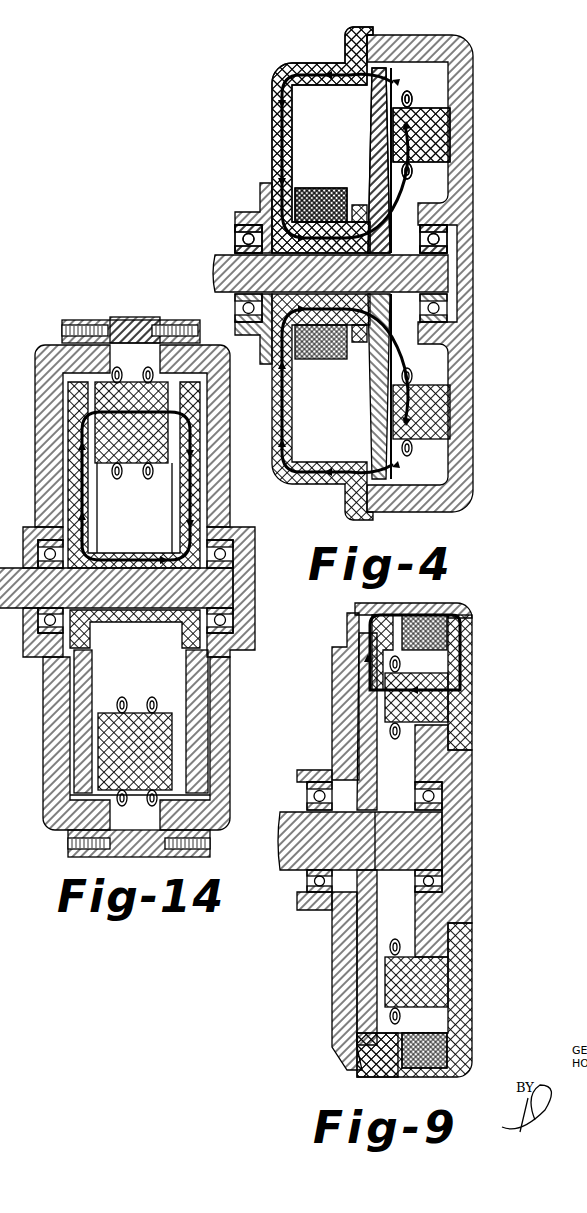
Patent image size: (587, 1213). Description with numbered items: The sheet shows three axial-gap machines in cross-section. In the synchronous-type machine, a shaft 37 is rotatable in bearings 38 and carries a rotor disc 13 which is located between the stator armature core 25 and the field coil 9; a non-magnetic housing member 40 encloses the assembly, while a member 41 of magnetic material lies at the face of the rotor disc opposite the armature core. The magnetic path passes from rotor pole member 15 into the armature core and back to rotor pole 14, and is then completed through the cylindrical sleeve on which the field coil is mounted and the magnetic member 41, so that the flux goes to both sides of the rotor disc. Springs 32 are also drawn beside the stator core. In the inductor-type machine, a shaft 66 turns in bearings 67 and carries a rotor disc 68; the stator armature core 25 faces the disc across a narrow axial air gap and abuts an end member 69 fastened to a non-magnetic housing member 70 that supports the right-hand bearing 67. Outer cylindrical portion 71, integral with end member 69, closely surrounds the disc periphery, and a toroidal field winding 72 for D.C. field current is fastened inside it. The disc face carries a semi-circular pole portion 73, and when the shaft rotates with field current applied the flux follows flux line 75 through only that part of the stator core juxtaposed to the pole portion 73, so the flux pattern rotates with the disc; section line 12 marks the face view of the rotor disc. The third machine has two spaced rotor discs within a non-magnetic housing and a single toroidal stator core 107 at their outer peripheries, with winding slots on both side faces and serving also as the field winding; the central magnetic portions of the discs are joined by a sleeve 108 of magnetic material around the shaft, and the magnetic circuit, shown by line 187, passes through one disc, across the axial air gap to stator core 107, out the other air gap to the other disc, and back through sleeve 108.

In FIG. 4, the field coil 9 is at (330, 188).
In FIG. 4, the rotor disc 13 is at (366, 134).
In FIG. 4, the rotor pole 14 is at (398, 81).
In FIG. 4, the rotor pole member 15 is at (395, 190).
In FIG. 4, the stator armature core 25 is at (448, 115).
In FIG. 9, the stator armature core 25 is at (450, 712).
In FIG. 4, the spring 32 is at (412, 100).
In FIG. 4, the shaft 37 is at (216, 281).
In FIG. 4, the bearings 38 is at (237, 240).
In FIG. 4, the non-magnetic housing member 40 is at (475, 132).
In FIG. 4, the magnetic member 41 is at (272, 133).
In FIG. 14, the toroidal stator core 107 is at (160, 400).
In FIG. 14, the sleeve 108 is at (120, 560).
In FIG. 14, the magnetic circuit line 187 is at (190, 476).
In FIG. 9, the section line 12 is at (360, 638).
In FIG. 9, the shaft 66 is at (282, 842).
In FIG. 9, the bearings 67 is at (306, 797).
In FIG. 9, the rotor disc 68 is at (355, 735).
In FIG. 9, the end member 69 is at (473, 731).
In FIG. 9, the housing member 70 is at (473, 835).
In FIG. 9, the outer cylindrical portion 71 is at (458, 606).
In FIG. 9, the toroidal field winding 72 is at (448, 642).
In FIG. 9, the pole portion 73 is at (368, 665).
In FIG. 9, the flux line 75 is at (461, 676).